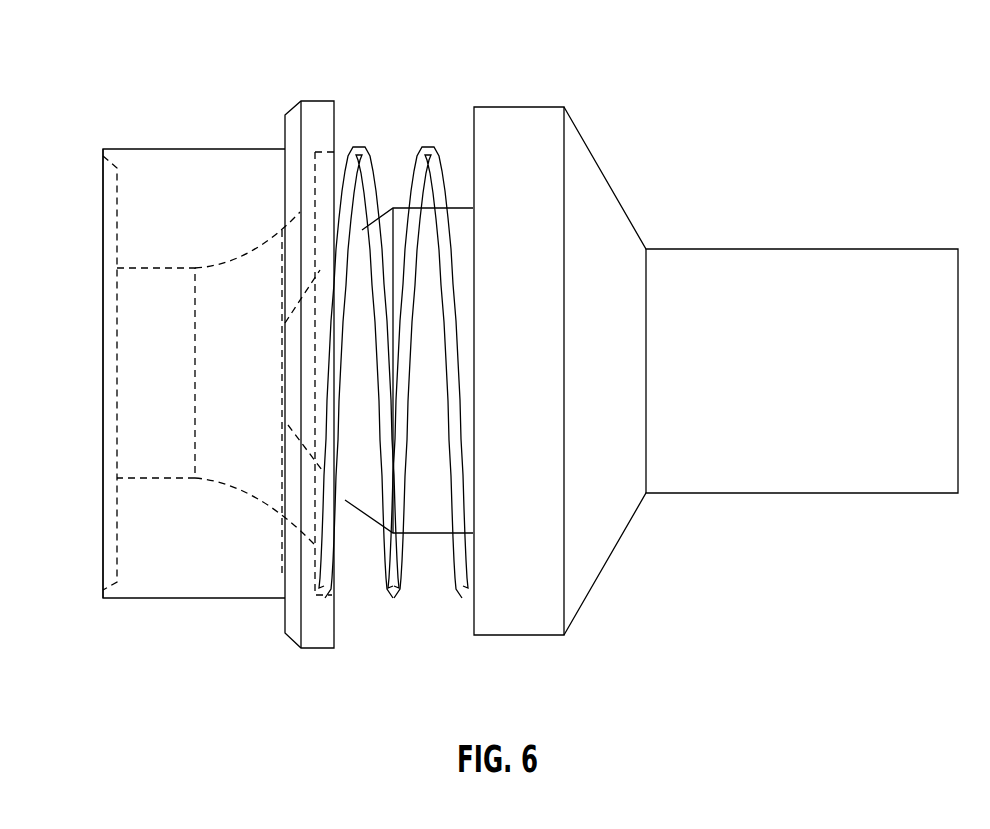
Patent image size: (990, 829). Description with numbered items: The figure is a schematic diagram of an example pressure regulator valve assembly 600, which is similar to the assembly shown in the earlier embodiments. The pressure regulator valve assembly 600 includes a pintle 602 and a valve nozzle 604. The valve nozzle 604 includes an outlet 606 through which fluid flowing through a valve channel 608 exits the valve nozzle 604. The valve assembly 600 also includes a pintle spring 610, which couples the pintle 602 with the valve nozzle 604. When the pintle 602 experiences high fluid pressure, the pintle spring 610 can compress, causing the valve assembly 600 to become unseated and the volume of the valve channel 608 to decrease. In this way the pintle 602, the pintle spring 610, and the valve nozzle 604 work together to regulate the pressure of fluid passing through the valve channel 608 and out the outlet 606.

The pressure regulator valve assembly 600 is at (138, 53).
The pintle 602 is at (403, 203).
The valve nozzle 604 is at (190, 165).
The outlet 606 is at (102, 373).
The valve channel 608 is at (350, 542).
The pintle spring 610 is at (424, 158).